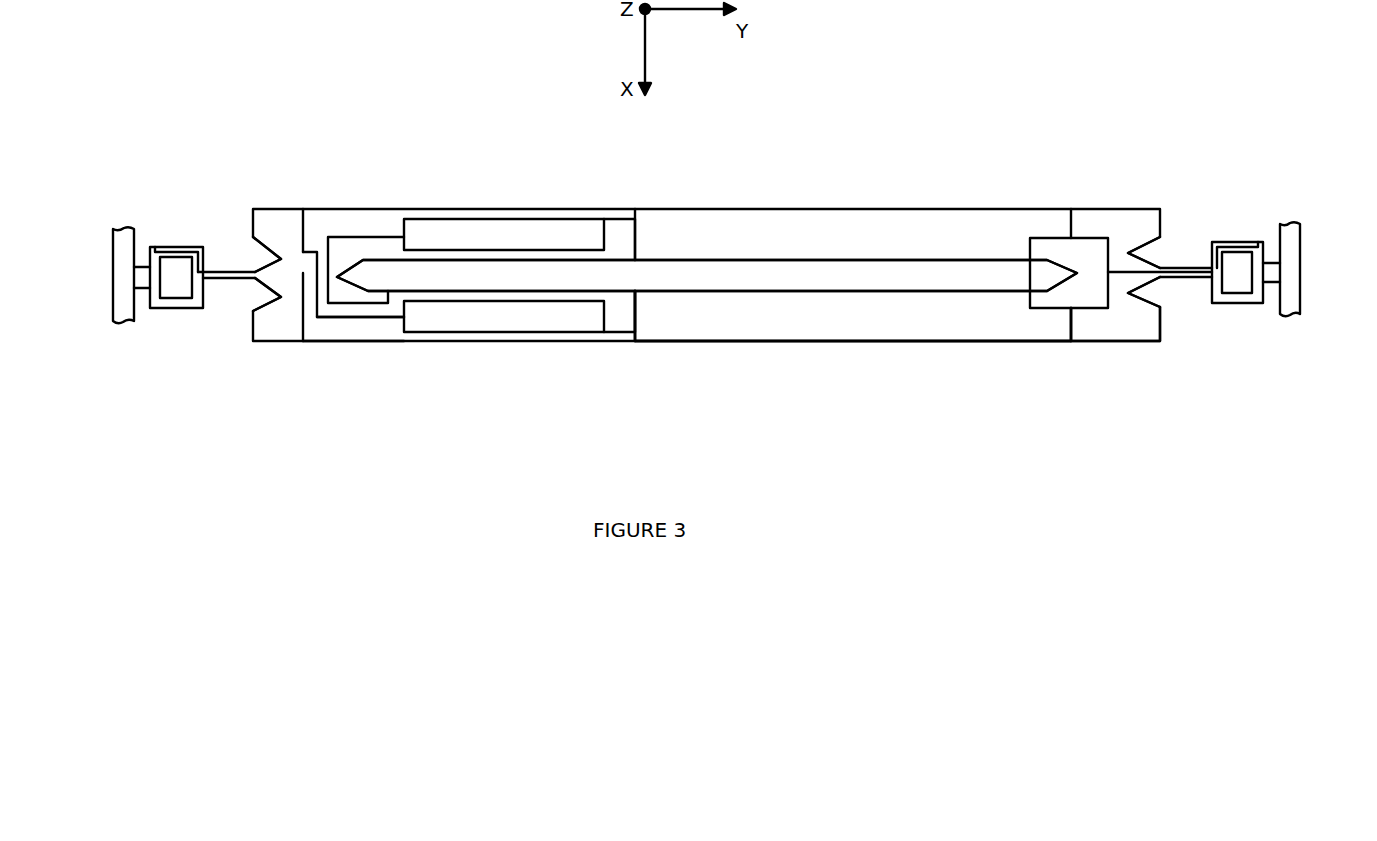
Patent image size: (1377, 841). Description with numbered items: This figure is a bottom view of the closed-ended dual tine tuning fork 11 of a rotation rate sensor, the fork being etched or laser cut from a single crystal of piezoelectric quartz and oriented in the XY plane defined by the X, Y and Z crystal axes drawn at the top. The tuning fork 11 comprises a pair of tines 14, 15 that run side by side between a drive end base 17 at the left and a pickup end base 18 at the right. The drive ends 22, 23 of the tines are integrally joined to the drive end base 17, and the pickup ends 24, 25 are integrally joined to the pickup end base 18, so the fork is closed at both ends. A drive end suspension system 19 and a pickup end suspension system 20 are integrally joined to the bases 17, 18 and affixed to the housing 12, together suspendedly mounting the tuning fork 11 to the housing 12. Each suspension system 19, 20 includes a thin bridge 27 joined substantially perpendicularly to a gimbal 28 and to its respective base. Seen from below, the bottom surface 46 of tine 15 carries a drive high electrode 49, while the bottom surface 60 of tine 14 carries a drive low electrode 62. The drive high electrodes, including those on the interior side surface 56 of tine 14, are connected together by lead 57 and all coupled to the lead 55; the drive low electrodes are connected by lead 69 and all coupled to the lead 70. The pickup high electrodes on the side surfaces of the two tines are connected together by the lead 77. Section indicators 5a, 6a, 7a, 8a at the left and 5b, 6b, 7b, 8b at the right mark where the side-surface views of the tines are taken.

The closed-ended dual tine tuning fork 11 is at (892, 209).
The housing 12 is at (125, 321).
The tine 14 is at (705, 320).
The tine 15 is at (705, 225).
The drive end base 17 is at (277, 209).
The pickup end base 18 is at (1162, 327).
The drive end suspension system 19 is at (233, 112).
The pickup end suspension system 20 is at (1171, 112).
The drive end 22 is at (387, 341).
The drive end 23 is at (388, 209).
The pickup end 24 is at (1035, 341).
The pickup end 25 is at (1037, 209).
The thin bridge 27 is at (238, 283).
The gimbal 28 is at (181, 247).
The bottom surface of tine 15 46 is at (705, 225).
The drive high electrode 49 is at (497, 235).
The lead 55 is at (297, 279).
The interior side surface of tine 14 56 is at (357, 237).
The lead 57 is at (638, 318).
The bottom surface of tine 14 60 is at (705, 320).
The drive low electrode 62 is at (497, 320).
The lead 69 is at (638, 228).
The lead 70 is at (347, 318).
The lead 77 is at (1118, 273).
The section line 5a is at (97, 400).
The section line 6a is at (97, 282).
The section line 7a is at (97, 267).
The section line 8a is at (97, 145).
The section line 5b is at (1322, 398).
The section line 6b is at (1322, 282).
The section line 7b is at (1322, 267).
The section line 8b is at (1322, 145).